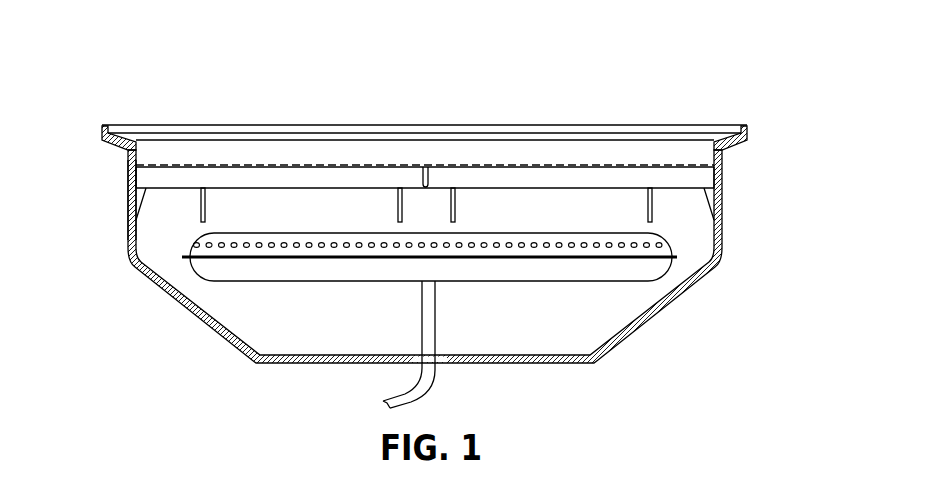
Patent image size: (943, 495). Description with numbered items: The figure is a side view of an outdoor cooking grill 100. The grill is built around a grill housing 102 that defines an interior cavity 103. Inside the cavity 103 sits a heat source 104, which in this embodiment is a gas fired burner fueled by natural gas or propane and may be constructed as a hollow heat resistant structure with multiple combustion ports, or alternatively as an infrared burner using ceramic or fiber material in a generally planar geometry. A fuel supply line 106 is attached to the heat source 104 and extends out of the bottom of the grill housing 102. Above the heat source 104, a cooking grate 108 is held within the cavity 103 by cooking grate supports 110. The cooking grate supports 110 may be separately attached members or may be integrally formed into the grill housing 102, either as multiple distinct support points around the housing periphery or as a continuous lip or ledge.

The outdoor cooking grill 100 is at (508, 111).
The grill housing 102 is at (723, 253).
The cavity 103 is at (698, 257).
The heat source 104 is at (647, 270).
The fuel supply line 106 is at (407, 370).
The cooking grate 108 is at (173, 173).
The cooking grate supports 110 is at (138, 195).